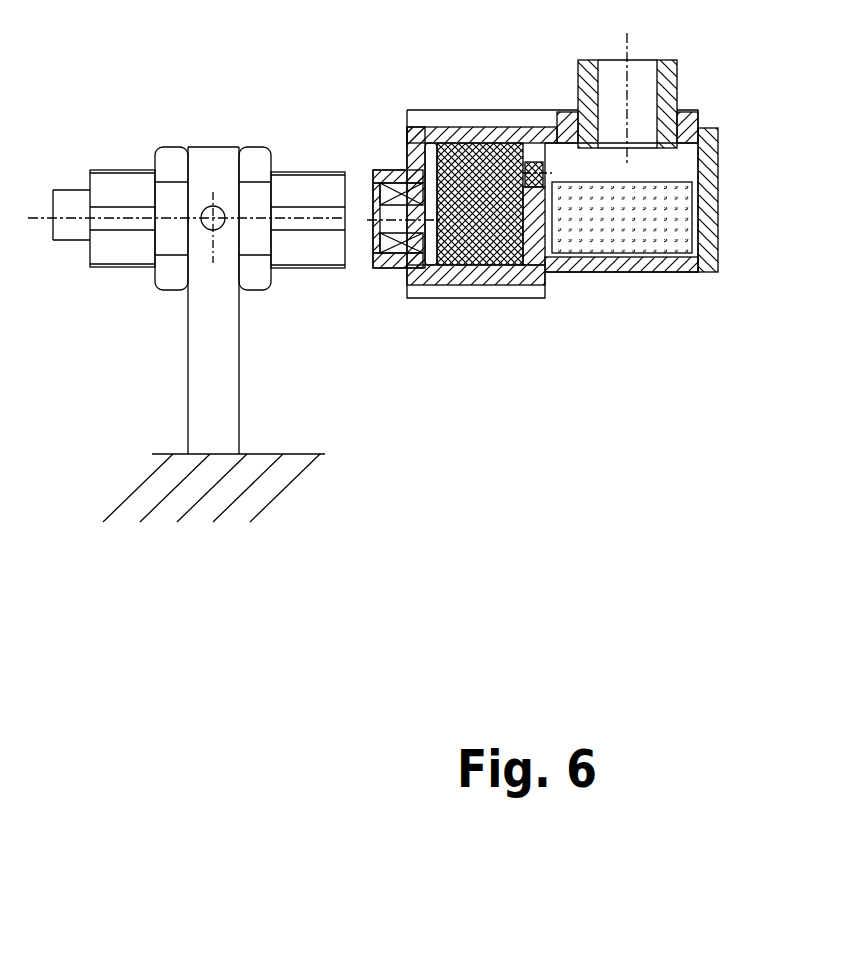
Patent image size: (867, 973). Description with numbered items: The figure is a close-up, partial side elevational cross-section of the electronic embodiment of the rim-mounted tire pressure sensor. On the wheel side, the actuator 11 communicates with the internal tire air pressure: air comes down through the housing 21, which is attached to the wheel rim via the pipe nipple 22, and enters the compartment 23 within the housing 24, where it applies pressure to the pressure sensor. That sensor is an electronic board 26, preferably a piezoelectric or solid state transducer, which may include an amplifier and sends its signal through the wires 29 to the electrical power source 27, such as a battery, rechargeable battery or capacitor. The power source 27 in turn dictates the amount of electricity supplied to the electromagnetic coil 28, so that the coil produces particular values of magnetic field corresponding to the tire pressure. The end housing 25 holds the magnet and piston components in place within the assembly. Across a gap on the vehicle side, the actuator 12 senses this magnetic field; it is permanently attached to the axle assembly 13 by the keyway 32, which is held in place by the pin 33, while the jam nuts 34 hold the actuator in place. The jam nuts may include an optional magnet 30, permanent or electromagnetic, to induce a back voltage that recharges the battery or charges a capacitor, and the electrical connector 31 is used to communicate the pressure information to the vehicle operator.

The actuator 11 is at (560, 213).
The actuator 12 is at (95, 170).
The axle assembly 13 is at (214, 500).
The housing 21 is at (543, 290).
The pipe nipple 22 is at (679, 62).
The compartment 23 is at (684, 168).
The housing 24 is at (720, 190).
The end housing 25 is at (703, 273).
The electronic board 26 is at (594, 255).
The power source 27 is at (474, 264).
The electromagnetic coil 28 is at (382, 177).
The wires 29 is at (537, 160).
The magnet 30 is at (306, 231).
The electrical connector 31 is at (53, 241).
The keyway 32 is at (188, 392).
The pin 33 is at (207, 204).
The jam nuts 34 is at (163, 291).